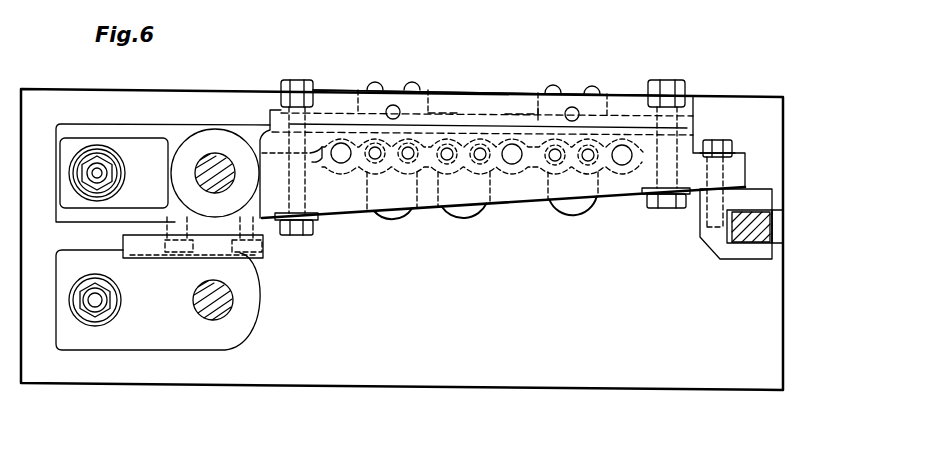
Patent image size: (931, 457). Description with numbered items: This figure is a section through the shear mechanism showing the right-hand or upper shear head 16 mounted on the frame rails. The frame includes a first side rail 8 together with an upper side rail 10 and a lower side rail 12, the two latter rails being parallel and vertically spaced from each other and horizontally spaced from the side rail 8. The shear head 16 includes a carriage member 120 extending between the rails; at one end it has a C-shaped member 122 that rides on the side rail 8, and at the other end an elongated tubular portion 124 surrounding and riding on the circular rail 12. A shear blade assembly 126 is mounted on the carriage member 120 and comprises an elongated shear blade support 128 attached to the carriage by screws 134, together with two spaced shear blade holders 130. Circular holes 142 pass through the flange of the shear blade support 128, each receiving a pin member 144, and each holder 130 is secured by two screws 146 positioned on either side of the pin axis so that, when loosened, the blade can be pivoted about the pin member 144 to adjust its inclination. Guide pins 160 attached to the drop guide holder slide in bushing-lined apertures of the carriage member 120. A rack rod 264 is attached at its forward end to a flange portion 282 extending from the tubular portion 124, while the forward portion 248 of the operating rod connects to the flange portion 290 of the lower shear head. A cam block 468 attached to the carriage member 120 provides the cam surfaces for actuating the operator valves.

The first side rail 8 is at (752, 214).
The upper side rail 10 is at (222, 166).
The lower side rail 12 is at (222, 303).
The right-hand or upper shear head 16 is at (708, 128).
The carriage member 120 is at (357, 200).
The C-shaped member 122 is at (715, 247).
The elongated tubular portion 124 is at (218, 112).
The shear blade assembly 126 is at (512, 95).
The elongated shear blade support 128 is at (330, 98).
The shear blade holder 130 is at (483, 113).
The screws 134 is at (297, 86).
The circular holes 142 is at (393, 108).
The pin member 144 is at (400, 113).
The screws 146 is at (375, 86).
The guide pins 160 is at (377, 160).
The forward portion of the operating rod 248 is at (92, 308).
The rack rod 264 is at (99, 170).
The flange portion 282 is at (147, 162).
The flange portion 290 is at (196, 336).
The cam block 468 is at (265, 246).